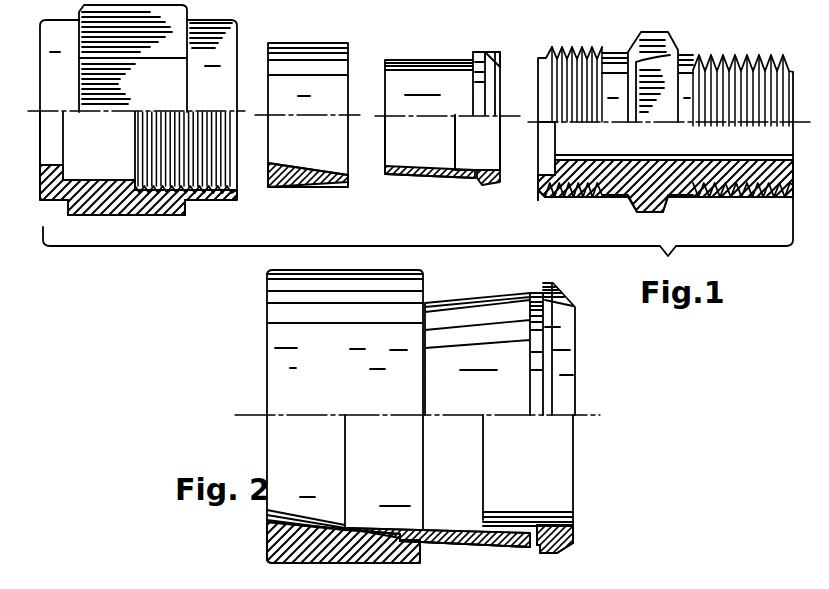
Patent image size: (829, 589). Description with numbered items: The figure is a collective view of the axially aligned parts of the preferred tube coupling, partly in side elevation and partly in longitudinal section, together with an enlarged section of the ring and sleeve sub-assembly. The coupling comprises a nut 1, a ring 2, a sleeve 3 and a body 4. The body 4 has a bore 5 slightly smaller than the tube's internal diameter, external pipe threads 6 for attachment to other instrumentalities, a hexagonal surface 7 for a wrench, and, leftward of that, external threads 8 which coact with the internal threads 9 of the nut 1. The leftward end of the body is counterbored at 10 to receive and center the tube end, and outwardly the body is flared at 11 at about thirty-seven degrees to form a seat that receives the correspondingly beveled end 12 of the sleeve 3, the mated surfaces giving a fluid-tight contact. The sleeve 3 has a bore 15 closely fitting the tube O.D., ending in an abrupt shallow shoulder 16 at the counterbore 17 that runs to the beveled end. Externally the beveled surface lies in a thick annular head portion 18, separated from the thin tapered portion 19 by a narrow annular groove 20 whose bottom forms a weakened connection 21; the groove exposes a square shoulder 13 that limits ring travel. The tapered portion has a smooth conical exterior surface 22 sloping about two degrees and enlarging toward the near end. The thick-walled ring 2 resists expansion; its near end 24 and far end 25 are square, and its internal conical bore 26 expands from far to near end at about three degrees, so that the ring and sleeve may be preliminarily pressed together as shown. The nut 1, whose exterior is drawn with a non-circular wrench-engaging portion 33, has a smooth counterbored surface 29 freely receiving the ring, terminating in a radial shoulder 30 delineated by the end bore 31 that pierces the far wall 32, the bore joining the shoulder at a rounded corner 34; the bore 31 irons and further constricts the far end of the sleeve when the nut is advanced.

In FIG. 1, the nut 1 is at (139, 114).
In FIG. 1, the ring 2 is at (316, 115).
In FIG. 2, the ring 2 is at (267, 325).
In FIG. 1, the sleeve 3 is at (443, 121).
In FIG. 2, the sleeve 3 is at (478, 423).
In FIG. 1, the body 4 is at (650, 114).
In FIG. 1, the bore 5 is at (696, 158).
In FIG. 1, the external pipe threads 6 is at (742, 57).
In FIG. 1, the hexagonal surface 7 is at (668, 42).
In FIG. 1, the external threads 8 is at (575, 47).
In FIG. 1, the internal threads 9 is at (215, 160).
In FIG. 1, the counterbore 10 is at (545, 150).
In FIG. 1, the flared seat 11 is at (538, 175).
In FIG. 1, the beveled end 12 is at (498, 52).
In FIG. 1, the square shoulder 13 is at (480, 52).
In FIG. 2, the square shoulder 13 is at (540, 553).
In FIG. 1, the bore 15 is at (394, 150).
In FIG. 1, the shoulder 16 is at (462, 165).
In FIG. 1, the counterbore 17 is at (490, 170).
In FIG. 2, the annular head portion 18 is at (545, 288).
In FIG. 1, the tapered portion 19 is at (400, 175).
In FIG. 1, the annular groove 20 is at (478, 185).
In FIG. 2, the weakened connection 21 is at (555, 510).
In FIG. 1, the conical exterior surface 22 is at (438, 180).
In FIG. 2, the conical exterior surface 22 is at (450, 543).
In FIG. 1, the near end 24 is at (348, 182).
In FIG. 1, the far end 25 is at (268, 185).
In FIG. 1, the tapered bore 26 is at (330, 163).
In FIG. 1, the counterbored surface 29 is at (122, 180).
In FIG. 1, the shoulder 30 is at (95, 176).
In FIG. 1, the end bore 31 is at (52, 160).
In FIG. 1, the far wall 32 is at (48, 195).
In FIG. 1, the cylindrical portion 33 is at (165, 43).
In FIG. 1, the rounded corner 34 is at (72, 162).